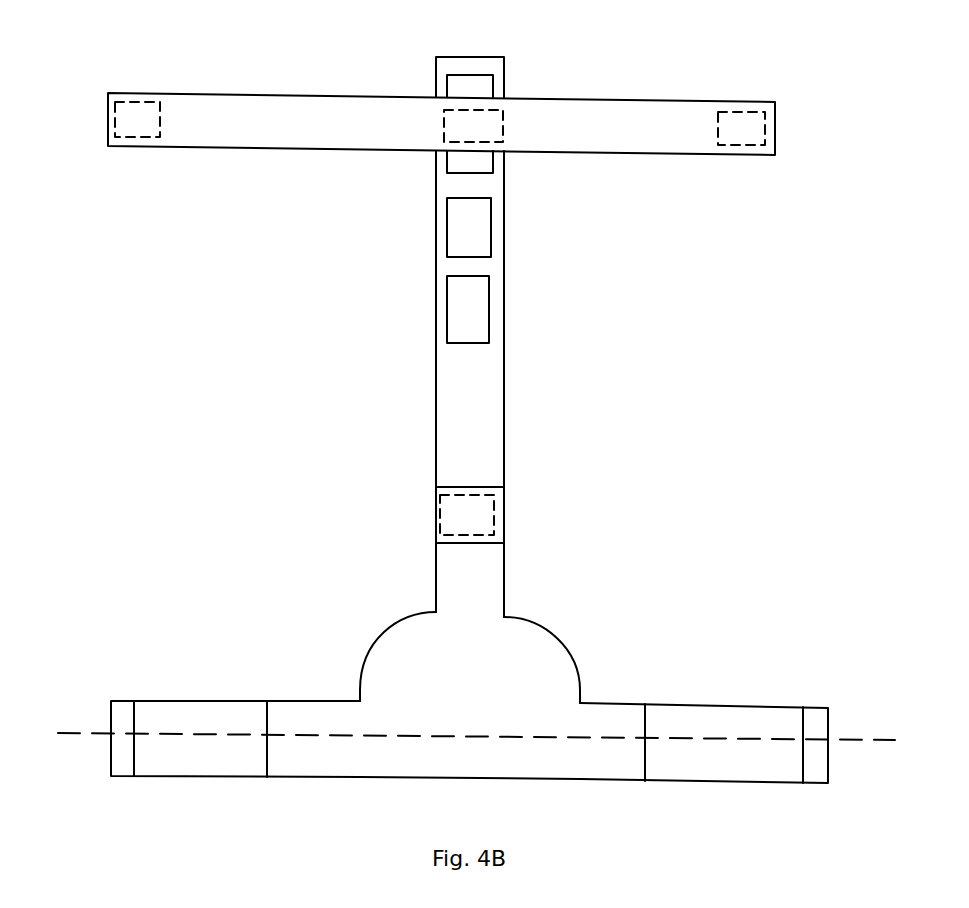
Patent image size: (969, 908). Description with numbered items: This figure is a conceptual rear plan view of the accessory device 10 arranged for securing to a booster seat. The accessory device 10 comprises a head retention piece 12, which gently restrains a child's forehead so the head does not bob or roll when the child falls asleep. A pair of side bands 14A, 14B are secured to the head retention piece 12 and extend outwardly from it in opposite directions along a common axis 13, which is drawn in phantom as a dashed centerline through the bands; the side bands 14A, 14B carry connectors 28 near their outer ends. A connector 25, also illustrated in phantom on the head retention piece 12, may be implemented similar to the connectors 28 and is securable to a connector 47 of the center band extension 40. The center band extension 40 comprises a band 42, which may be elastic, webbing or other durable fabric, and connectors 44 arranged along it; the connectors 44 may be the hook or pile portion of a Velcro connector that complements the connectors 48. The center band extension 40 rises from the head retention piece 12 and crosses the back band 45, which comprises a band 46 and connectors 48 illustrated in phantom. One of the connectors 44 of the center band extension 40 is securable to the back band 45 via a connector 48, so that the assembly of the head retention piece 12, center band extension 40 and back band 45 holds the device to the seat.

The accessory device 10 is at (460, 741).
The head retention piece 12 is at (547, 655).
The common axis 13 is at (460, 761).
The side band 14A is at (204, 708).
The side band 14B is at (712, 715).
The connector 25 is at (485, 520).
The connector 28 is at (120, 710).
The center band extension 40 is at (478, 332).
The band 42 is at (438, 407).
The connector 44 is at (490, 80).
The back band 45 is at (446, 112).
The band 46 is at (618, 108).
The connector 47 is at (437, 498).
The connector 48 is at (118, 135).